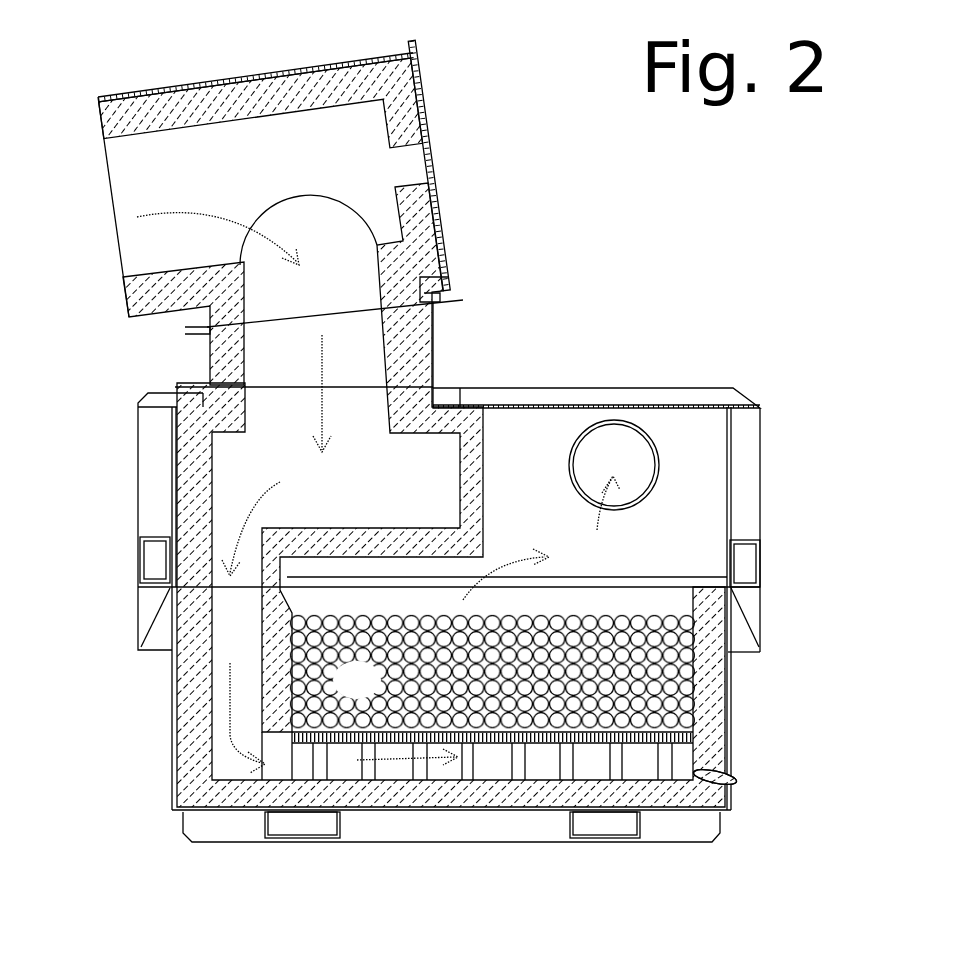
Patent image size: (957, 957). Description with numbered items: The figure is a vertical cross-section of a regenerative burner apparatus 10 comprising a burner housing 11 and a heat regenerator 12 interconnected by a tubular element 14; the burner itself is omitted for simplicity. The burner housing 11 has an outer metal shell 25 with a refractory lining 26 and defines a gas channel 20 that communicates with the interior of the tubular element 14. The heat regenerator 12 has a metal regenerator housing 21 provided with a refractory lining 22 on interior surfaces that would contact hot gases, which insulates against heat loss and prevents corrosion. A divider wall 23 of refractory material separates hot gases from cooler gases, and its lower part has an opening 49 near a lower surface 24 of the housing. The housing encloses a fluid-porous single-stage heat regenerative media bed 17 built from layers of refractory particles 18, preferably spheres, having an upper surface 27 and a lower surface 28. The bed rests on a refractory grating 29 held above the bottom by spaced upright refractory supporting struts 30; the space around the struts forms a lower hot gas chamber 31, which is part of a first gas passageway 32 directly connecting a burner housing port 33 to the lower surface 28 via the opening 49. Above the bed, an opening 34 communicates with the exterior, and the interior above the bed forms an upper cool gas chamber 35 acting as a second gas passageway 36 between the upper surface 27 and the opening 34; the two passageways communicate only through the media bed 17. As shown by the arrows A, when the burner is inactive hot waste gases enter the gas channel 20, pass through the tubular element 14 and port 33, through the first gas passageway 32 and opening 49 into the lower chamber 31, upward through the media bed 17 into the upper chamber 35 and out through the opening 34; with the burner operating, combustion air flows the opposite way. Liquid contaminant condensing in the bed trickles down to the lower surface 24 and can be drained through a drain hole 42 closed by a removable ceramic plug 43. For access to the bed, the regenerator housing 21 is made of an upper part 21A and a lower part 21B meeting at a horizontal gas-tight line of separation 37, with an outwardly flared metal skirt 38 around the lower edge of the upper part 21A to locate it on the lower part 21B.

The regenerative burner apparatus 10 is at (595, 242).
The burner housing 11 is at (228, 97).
The heat regenerator 12 is at (590, 402).
The tubular element 14 is at (434, 348).
The heat regenerative media bed 17 is at (343, 695).
The refractory particles 18 is at (318, 620).
The gas channel 20 is at (284, 170).
The regenerator housing 21 is at (173, 770).
The upper part 21A is at (762, 470).
The lower part 21B is at (732, 718).
The refractory lining 22 is at (183, 797).
The divider wall 23 is at (472, 492).
The lower surface 24 is at (352, 767).
The outer metal shell 25 is at (296, 75).
The refractory lining 26 is at (408, 106).
The upper surface 27 is at (607, 620).
The lower surface 28 is at (693, 765).
The refractory grating 29 is at (540, 745).
The supporting struts 30 is at (612, 768).
The lower chamber 31 is at (505, 775).
The first gas passageway 32 is at (220, 652).
The burner housing port 33 is at (366, 388).
The opening 34 is at (600, 460).
The upper chamber 35 is at (506, 460).
The second gas passageway 36 is at (519, 530).
The line of separation 37 is at (660, 587).
The metal skirt 38 is at (160, 605).
The drain hole 42 is at (713, 783).
The ceramic plug 43 is at (737, 782).
The opening 49 is at (262, 768).
The arrows A is at (160, 212).